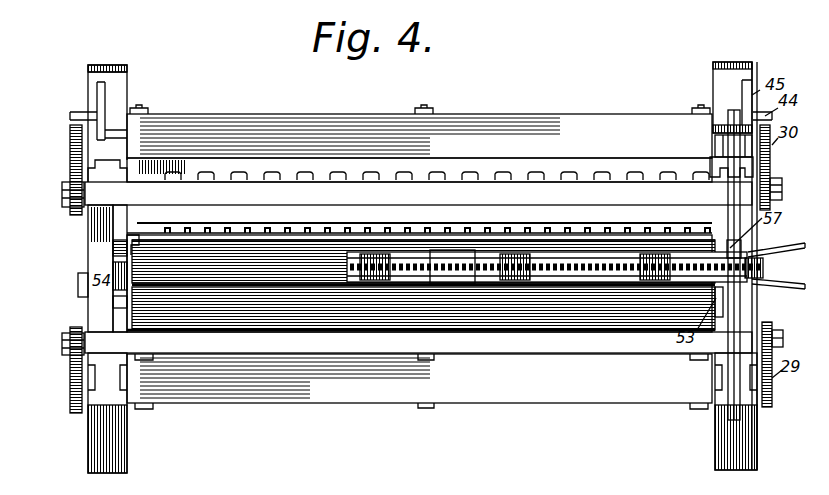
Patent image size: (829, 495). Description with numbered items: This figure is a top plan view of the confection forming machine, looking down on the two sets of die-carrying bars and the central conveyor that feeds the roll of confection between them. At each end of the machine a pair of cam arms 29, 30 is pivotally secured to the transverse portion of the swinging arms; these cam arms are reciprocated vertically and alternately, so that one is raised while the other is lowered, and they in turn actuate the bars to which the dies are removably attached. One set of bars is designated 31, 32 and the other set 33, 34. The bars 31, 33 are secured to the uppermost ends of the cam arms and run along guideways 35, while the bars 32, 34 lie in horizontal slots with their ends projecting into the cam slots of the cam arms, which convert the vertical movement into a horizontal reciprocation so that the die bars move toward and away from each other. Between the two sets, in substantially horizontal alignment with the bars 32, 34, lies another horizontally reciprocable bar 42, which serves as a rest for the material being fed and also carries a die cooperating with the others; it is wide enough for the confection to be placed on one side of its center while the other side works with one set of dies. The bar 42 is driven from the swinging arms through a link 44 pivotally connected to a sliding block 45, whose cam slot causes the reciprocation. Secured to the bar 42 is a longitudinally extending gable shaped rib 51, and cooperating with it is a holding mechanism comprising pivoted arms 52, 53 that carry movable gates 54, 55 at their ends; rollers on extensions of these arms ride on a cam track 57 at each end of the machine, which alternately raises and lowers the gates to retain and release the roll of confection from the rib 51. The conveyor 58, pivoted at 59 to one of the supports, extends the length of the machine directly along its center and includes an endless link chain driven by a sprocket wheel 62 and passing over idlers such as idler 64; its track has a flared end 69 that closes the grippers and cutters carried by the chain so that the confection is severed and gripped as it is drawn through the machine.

The cam arm 29 is at (70, 378).
The cam arm 30 is at (70, 150).
The bar 31 is at (418, 193).
The bar 32 is at (419, 143).
The bar 33 is at (421, 292).
The bar 34 is at (419, 381).
The guideway 35 is at (100, 170).
The bar 42 is at (222, 218).
The link 44 is at (82, 116).
The sliding block 45 is at (93, 100).
The gable shaped rib 51 is at (232, 262).
The arm 52 is at (423, 253).
The arm 53 is at (116, 302).
The movable gate 54 is at (300, 232).
The movable gate 55 is at (333, 330).
The cam track 57 is at (113, 248).
The conveyor 58 is at (532, 252).
The pivot 59 is at (740, 310).
The sprocket wheel 62 is at (778, 273).
The idler 64 is at (445, 252).
The flared end 69 is at (776, 242).